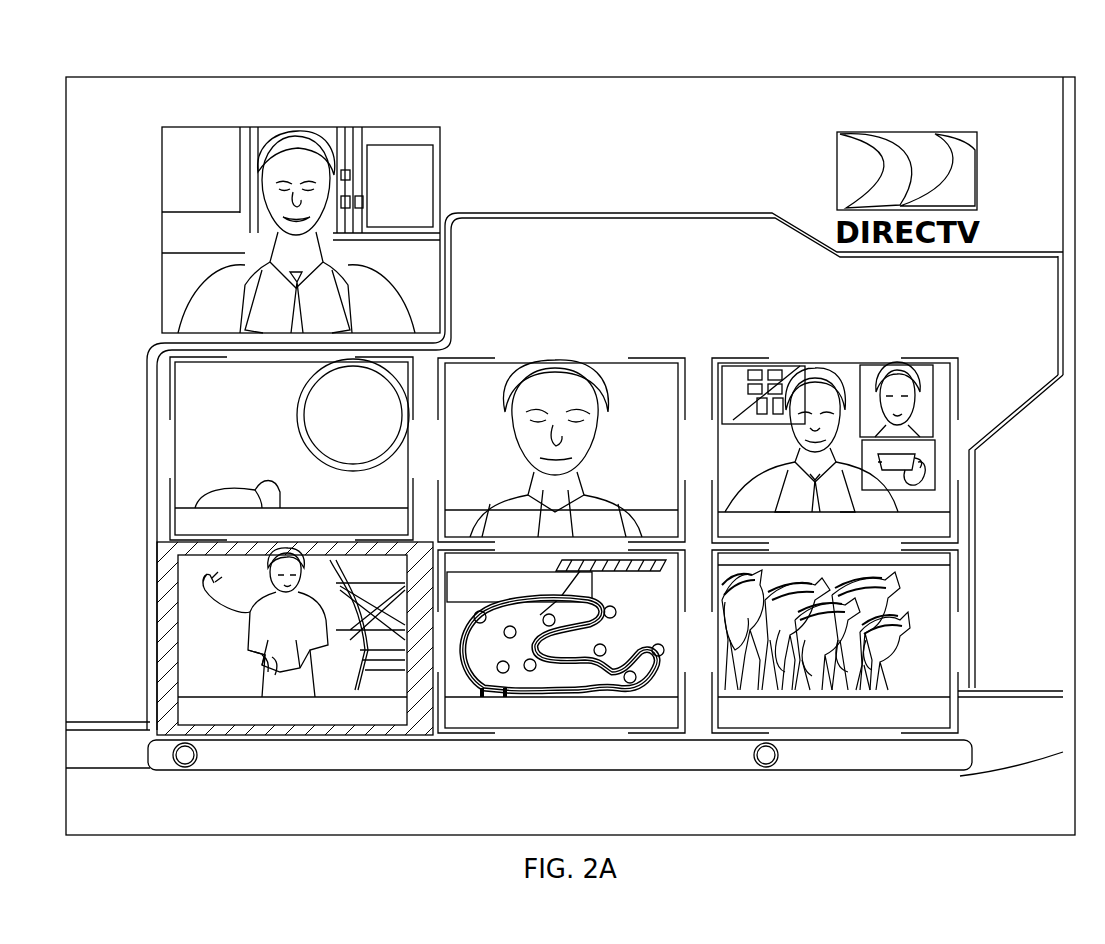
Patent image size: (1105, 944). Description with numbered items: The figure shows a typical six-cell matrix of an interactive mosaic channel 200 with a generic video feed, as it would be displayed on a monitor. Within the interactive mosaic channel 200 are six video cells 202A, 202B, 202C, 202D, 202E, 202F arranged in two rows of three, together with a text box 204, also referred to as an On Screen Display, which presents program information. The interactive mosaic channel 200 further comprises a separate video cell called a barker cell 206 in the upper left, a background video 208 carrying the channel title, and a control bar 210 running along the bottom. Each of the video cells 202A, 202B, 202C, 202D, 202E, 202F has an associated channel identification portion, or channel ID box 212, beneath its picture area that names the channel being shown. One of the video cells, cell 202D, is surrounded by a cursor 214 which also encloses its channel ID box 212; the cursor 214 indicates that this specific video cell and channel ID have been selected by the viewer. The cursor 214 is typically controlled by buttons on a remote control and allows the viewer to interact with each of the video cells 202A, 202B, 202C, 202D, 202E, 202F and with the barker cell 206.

The interactive mosaic channel 200 is at (587, 63).
The video cell 202A is at (196, 390).
The video cell 202B is at (660, 372).
The video cell 202C is at (930, 476).
The video cell 202D is at (196, 658).
The video cell 202E is at (659, 673).
The video cell 202F is at (928, 642).
The text box 204 is at (738, 240).
The barker cell 206 is at (205, 162).
The background video 208 is at (660, 145).
The control bar 210 is at (158, 752).
The channel identification portion 212 is at (180, 525).
The cursor 214 is at (167, 592).